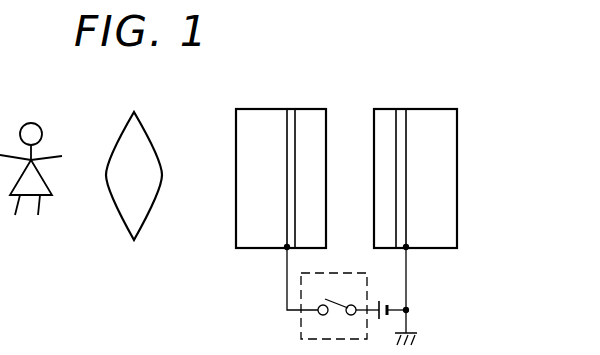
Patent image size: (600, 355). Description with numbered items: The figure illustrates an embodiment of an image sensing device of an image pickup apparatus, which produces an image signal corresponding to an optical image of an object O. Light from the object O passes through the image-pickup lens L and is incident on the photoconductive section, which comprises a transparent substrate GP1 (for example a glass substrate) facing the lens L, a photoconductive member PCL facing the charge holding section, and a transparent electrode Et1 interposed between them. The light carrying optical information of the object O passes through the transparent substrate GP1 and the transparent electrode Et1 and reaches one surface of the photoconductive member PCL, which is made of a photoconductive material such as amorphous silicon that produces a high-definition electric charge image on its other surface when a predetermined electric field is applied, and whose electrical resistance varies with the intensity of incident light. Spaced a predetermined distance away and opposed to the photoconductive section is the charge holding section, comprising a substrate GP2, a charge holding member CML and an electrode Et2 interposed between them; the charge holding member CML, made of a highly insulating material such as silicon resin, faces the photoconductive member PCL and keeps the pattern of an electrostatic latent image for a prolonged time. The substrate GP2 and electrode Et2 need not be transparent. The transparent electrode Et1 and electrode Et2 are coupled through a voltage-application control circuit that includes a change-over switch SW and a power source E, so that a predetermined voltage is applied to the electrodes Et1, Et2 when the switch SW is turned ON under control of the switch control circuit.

The object O is at (48, 148).
The image-pickup lens L is at (143, 135).
The transparent substrate GP1 is at (246, 118).
The transparent electrode Et1 is at (291, 115).
The photoconductive member PCL is at (311, 118).
The substrate GP2 is at (441, 118).
The charge holding member CML is at (383, 117).
The electrode Et2 is at (402, 117).
The change-over switch SW is at (301, 316).
The power source E is at (387, 323).